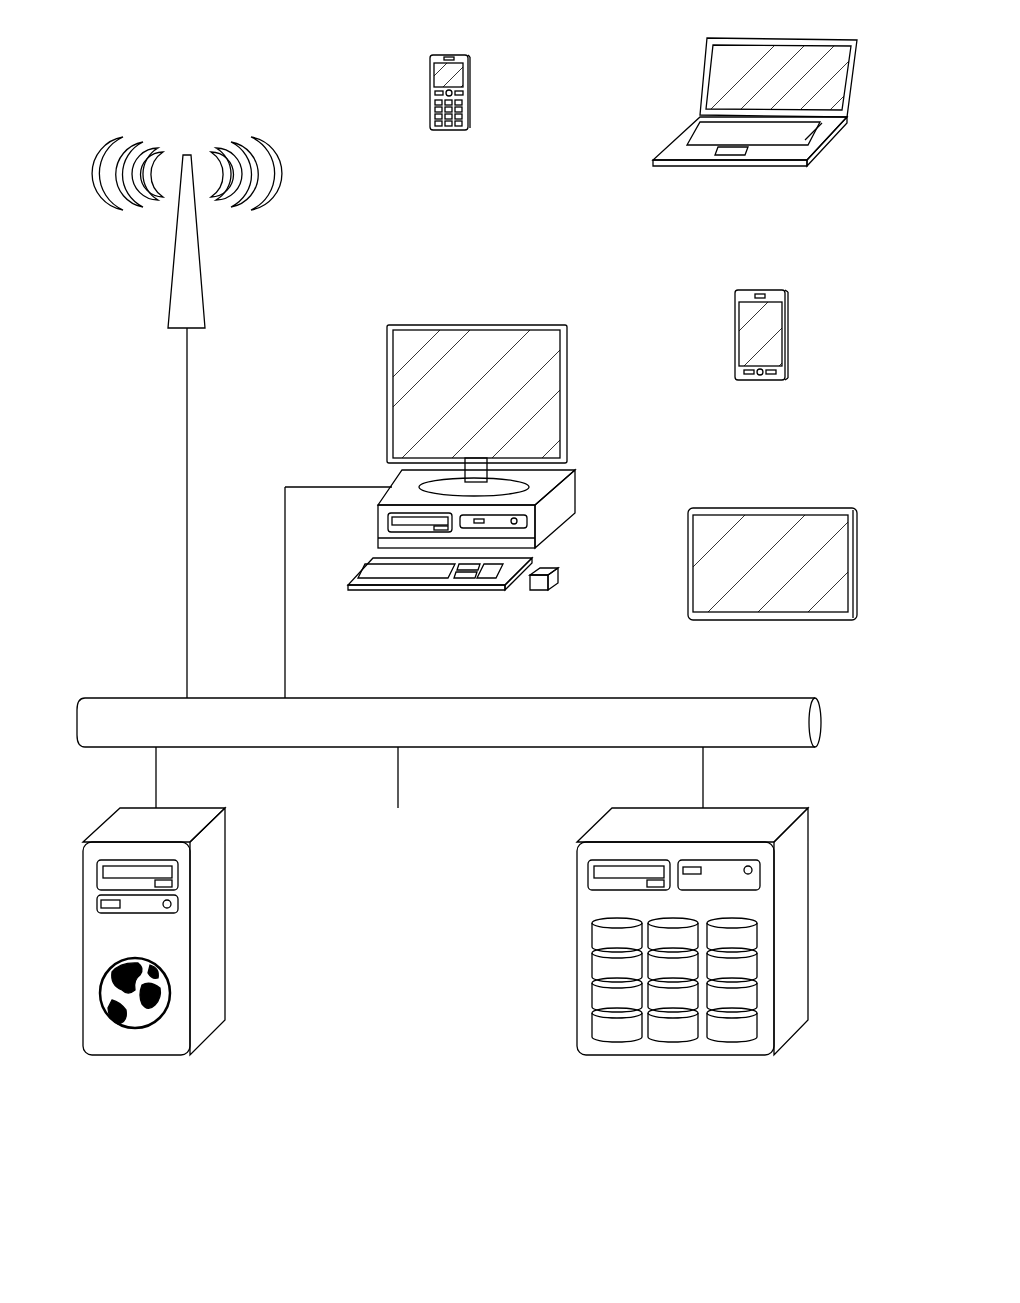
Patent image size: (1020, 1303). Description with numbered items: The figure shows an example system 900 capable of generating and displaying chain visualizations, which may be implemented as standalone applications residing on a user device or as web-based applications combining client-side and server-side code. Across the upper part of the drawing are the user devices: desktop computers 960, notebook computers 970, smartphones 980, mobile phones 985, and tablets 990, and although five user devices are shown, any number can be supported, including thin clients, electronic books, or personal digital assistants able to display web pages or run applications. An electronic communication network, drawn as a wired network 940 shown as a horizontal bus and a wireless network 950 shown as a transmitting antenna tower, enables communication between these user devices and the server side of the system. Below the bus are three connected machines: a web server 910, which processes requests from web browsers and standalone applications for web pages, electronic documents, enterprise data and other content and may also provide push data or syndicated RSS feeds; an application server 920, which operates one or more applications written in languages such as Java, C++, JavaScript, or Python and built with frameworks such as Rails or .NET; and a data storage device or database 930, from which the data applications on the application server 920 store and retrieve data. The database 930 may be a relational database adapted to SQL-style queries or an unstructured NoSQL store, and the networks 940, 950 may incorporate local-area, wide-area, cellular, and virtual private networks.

The system 900 is at (147, 75).
The web server 910 is at (143, 1044).
The application server 920 is at (575, 1005).
The data storage device or database 930 is at (667, 1037).
The wired network 940 is at (449, 647).
The wireless network 950 is at (210, 238).
The desktop computer 960 is at (457, 593).
The notebook computer 970 is at (763, 205).
The smartphone 980 is at (767, 390).
The mobile phone 985 is at (453, 148).
The tablet 990 is at (767, 618).